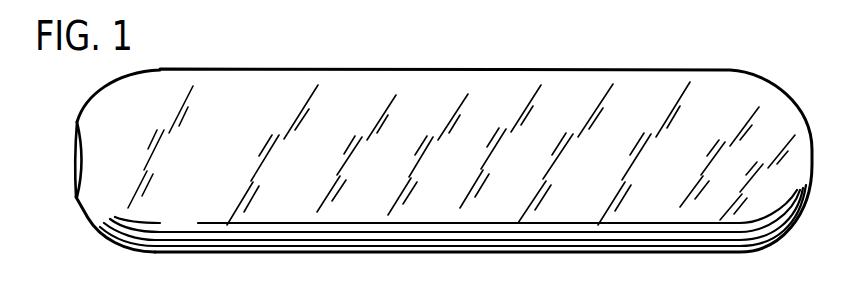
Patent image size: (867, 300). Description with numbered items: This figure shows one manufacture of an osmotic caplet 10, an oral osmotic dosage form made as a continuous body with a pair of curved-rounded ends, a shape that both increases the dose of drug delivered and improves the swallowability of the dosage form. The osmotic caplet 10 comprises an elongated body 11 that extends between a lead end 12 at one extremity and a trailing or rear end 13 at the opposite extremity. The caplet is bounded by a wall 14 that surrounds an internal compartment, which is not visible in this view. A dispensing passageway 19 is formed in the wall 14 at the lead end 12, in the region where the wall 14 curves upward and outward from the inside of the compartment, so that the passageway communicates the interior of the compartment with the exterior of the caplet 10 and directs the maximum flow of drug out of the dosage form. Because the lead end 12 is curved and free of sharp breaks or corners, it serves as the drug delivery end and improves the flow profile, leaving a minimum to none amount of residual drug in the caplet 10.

The osmotic caplet 10 is at (700, 50).
The body 11 is at (792, 100).
The lead end 12 is at (88, 218).
The trailing or rear end 13 is at (812, 163).
The wall 14 is at (735, 252).
The dispensing passageway 19 is at (75, 142).